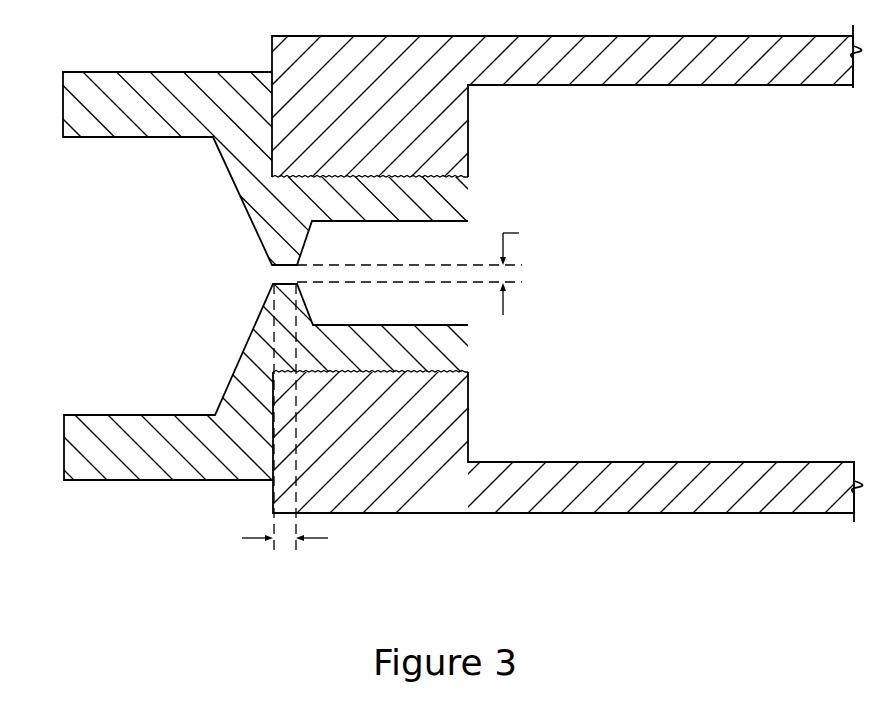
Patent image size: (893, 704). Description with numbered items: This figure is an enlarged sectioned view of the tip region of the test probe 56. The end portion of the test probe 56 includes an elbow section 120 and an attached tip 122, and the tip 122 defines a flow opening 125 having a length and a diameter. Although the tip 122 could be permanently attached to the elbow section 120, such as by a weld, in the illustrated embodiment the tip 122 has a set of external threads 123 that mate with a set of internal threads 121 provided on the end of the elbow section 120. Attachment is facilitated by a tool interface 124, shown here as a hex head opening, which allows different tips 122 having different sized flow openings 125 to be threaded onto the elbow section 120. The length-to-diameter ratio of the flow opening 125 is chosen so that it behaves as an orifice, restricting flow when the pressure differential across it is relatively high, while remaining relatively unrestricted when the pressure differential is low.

The test probe 56 is at (442, 576).
The elbow section 120 is at (605, 514).
The internal threads 121 is at (449, 371).
The tip 122 is at (103, 481).
The external threads 123 is at (449, 173).
The tool interface 124 is at (103, 138).
The flow opening 125 is at (276, 283).